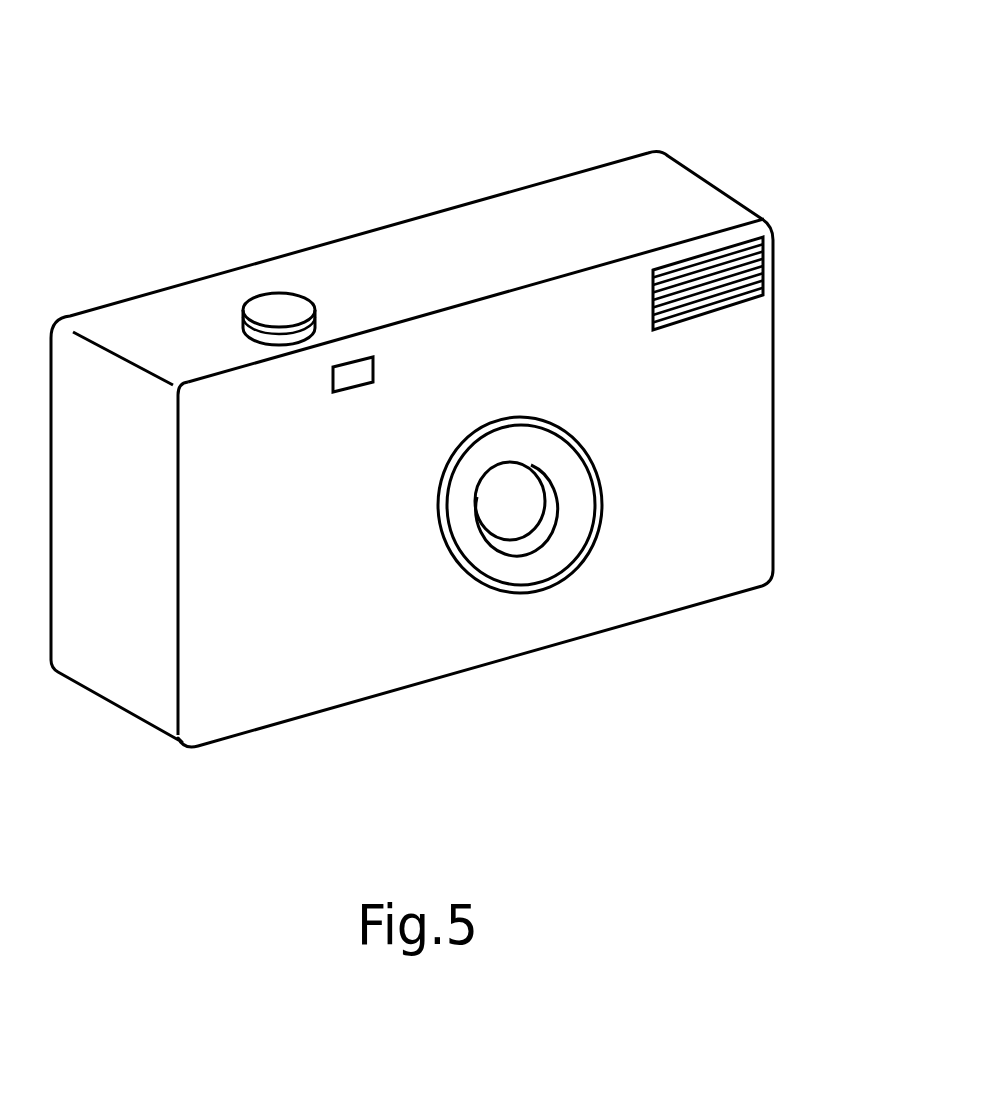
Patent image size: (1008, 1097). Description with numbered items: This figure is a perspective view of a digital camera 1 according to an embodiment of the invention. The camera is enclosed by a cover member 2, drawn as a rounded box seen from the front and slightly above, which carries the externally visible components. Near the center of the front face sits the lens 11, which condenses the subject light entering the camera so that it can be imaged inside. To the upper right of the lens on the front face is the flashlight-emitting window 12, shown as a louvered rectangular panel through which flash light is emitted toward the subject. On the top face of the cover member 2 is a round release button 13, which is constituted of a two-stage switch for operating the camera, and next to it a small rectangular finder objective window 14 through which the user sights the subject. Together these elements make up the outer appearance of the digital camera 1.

The digital camera 1 is at (489, 117).
The cover member 2 is at (318, 677).
The lens 11 is at (517, 495).
The flashlight-emitting window 12 is at (752, 268).
The release button 13 is at (280, 310).
The finder objective window 14 is at (363, 373).